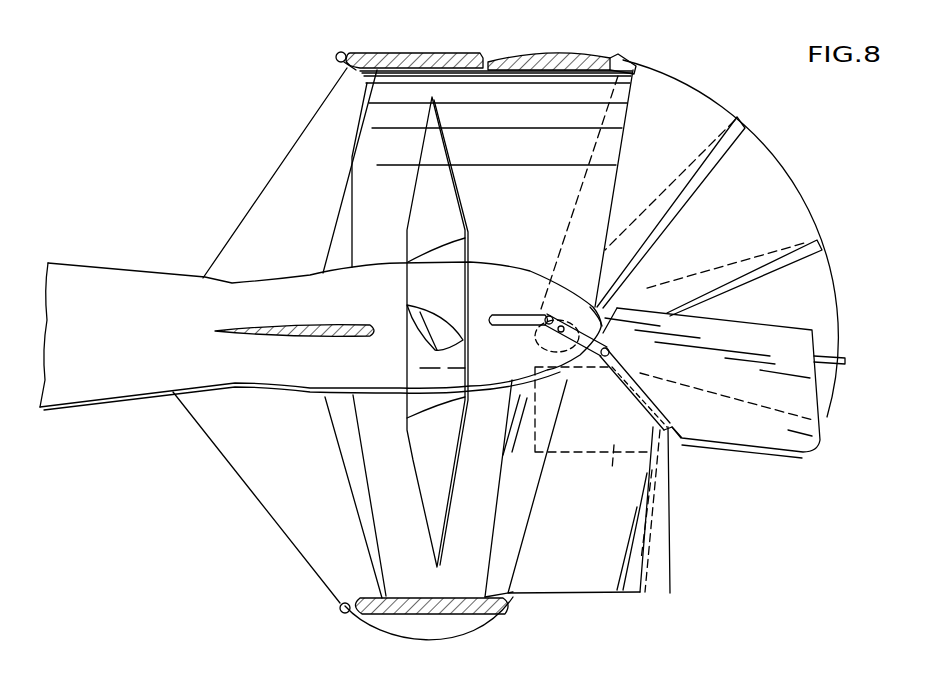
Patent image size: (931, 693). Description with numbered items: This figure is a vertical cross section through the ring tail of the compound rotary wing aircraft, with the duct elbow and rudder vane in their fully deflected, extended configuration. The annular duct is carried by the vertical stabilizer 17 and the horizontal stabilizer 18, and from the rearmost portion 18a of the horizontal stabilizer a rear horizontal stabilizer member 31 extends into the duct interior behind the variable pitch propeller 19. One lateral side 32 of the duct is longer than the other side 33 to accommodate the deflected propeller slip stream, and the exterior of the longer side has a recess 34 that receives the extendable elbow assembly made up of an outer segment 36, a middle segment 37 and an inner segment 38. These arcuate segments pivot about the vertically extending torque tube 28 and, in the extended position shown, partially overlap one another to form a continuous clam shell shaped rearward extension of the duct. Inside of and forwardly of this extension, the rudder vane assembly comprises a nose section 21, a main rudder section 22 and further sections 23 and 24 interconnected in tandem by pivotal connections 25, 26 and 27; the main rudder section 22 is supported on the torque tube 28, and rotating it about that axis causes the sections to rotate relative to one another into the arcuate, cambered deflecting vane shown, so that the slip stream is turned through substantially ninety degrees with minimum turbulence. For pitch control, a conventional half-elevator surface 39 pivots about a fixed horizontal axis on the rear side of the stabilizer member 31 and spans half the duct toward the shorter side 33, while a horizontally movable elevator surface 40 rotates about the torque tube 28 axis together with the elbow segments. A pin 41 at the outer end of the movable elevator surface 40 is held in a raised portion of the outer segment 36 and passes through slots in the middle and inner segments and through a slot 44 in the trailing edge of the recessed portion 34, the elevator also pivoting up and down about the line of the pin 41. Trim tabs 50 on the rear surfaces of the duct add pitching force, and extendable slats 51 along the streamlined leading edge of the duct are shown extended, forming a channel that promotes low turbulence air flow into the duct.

The vertical stabilizer 17 is at (298, 326).
The horizontal stabilizer 18 is at (265, 205).
The rearmost portion of the horizontal stabilizer 18a is at (470, 632).
The variable pitch propeller 19 is at (452, 301).
The rudder vane nose section 21 is at (498, 313).
The main rudder section 22 is at (538, 337).
The rudder vane section 23 is at (645, 398).
The rudder vane section 24 is at (652, 545).
The pivotal connection 25 is at (537, 313).
The pivotal connection 26 is at (609, 362).
The pivotal connection 27 is at (670, 430).
The torque tube 28 is at (583, 300).
The rear horizontal stabilizer member 31 is at (503, 540).
The longer lateral side of the duct 32 is at (447, 58).
The shorter lateral side of the duct 33 is at (415, 617).
The recess 34 is at (486, 55).
The outer elbow segment 36 is at (827, 292).
The middle elbow segment 37 is at (777, 165).
The inner elbow segment 38 is at (705, 110).
The half-elevator surface 39 is at (597, 551).
The horizontally movable elevator surface 40 is at (778, 398).
The pin 41 is at (848, 360).
The slot 44 is at (603, 60).
The trim tab 50 is at (612, 472).
The extendable slat 51 is at (338, 605).